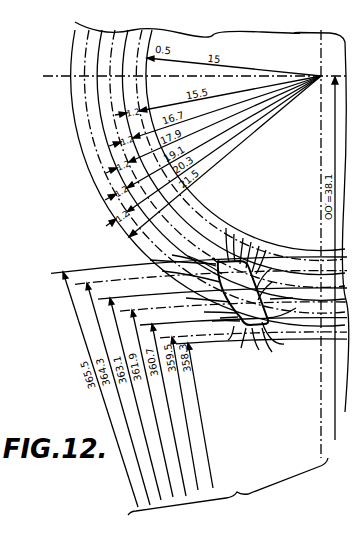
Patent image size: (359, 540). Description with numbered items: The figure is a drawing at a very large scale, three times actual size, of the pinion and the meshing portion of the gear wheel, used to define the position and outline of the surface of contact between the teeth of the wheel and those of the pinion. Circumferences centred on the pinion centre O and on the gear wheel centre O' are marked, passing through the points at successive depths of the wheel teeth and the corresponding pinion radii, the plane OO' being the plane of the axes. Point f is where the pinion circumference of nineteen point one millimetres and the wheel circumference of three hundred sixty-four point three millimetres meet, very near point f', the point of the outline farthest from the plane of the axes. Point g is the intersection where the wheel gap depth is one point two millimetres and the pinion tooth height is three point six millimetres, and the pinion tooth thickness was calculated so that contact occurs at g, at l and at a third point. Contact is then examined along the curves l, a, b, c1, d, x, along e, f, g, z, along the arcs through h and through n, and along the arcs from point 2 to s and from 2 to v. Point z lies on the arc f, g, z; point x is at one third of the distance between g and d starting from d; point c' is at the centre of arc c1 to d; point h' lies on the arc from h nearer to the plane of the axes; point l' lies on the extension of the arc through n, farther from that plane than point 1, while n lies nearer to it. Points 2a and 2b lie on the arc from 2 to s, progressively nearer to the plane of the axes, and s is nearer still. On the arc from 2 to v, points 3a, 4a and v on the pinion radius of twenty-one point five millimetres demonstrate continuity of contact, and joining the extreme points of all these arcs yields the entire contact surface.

The contact point 1 is at (226, 323).
The contact point 2 is at (228, 337).
The point 2a is at (240, 344).
The point 2b is at (289, 298).
The point 3a is at (258, 345).
The point 4a is at (271, 346).
The pinion centre O is at (195, 244).
The gear wheel centre O' is at (228, 488).
The point a is at (190, 256).
The point b is at (201, 260).
The point c c1 is at (212, 256).
The point e is at (162, 271).
The point f is at (268, 276).
The point f' is at (224, 238).
The point c' is at (232, 241).
The point g is at (241, 244).
The point d is at (249, 248).
The point x is at (256, 252).
The point z is at (262, 254).
The point n is at (270, 288).
The point s is at (285, 312).
The point v is at (277, 335).
The point h is at (199, 298).
The point h' is at (212, 313).
The point l is at (170, 258).
The point 1' l' is at (221, 324).